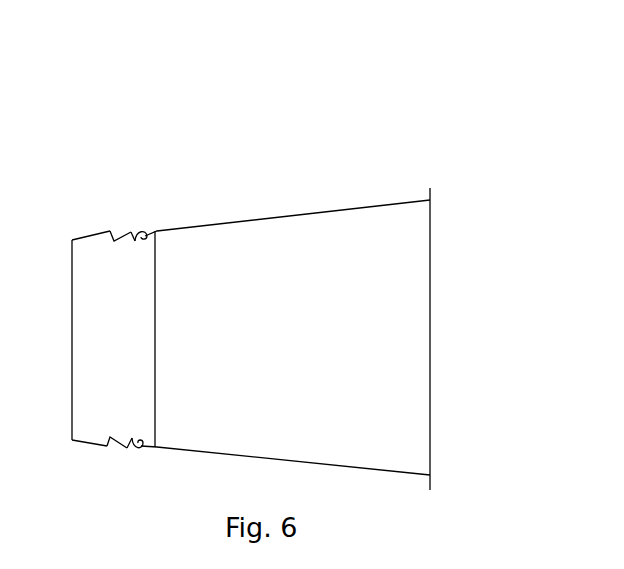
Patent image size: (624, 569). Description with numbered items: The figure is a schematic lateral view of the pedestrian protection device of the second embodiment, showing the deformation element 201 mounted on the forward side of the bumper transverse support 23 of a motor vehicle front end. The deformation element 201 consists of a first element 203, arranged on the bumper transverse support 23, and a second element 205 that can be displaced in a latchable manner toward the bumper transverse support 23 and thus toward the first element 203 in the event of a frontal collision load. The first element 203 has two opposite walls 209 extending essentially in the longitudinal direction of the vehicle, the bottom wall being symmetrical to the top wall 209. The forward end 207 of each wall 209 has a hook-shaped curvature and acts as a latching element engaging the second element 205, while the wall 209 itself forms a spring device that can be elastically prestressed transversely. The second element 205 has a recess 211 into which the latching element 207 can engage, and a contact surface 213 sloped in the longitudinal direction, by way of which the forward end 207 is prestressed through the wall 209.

The deformation element 201 is at (192, 100).
The first element 203 is at (337, 204).
The second element 205 is at (92, 232).
The forward end of the wall 207 is at (143, 231).
The wall 209 is at (197, 225).
The recess 211 is at (110, 241).
The contact surface 213 is at (133, 241).
The bumper transverse support 23 is at (432, 197).